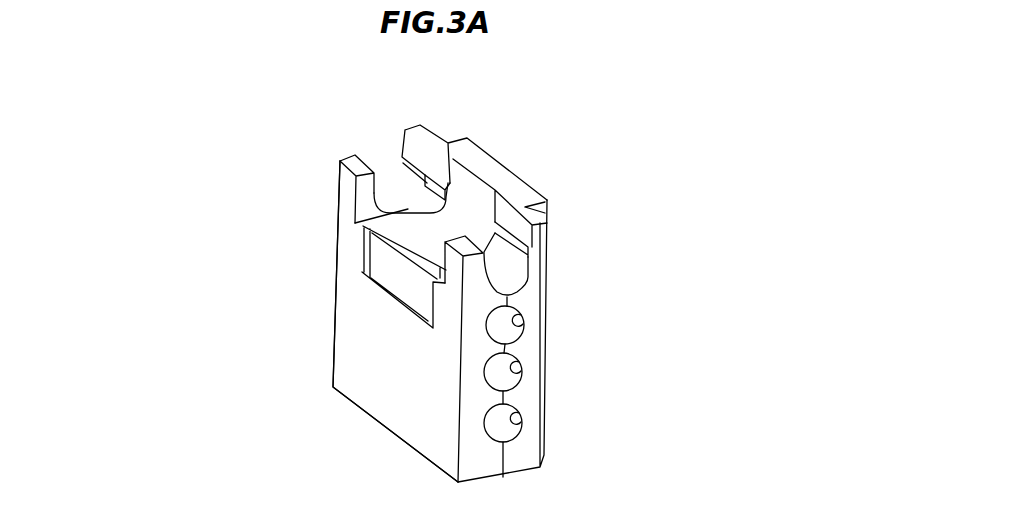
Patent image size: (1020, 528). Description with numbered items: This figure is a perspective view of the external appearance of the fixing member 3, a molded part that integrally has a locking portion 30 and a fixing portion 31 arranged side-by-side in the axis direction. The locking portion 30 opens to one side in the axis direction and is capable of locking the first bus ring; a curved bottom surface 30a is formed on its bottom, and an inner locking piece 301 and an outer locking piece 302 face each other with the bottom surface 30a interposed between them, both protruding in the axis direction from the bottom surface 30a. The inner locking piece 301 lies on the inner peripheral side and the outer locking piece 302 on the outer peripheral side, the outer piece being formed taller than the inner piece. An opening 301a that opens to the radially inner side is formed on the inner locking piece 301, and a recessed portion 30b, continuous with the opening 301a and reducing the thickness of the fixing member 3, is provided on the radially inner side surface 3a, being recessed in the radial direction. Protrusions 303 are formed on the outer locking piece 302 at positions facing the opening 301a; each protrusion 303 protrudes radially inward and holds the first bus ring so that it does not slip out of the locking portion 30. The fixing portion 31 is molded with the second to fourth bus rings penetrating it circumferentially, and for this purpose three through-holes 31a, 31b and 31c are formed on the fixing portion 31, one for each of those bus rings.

The fixing member 3 is at (567, 101).
The locking portion 30 is at (563, 249).
The bottom surface 30a is at (400, 186).
The recessed portion 30b is at (362, 273).
The inner locking piece 301 is at (362, 226).
The opening 301a is at (356, 180).
The outer locking piece 302 is at (480, 160).
The protrusion 303 is at (435, 183).
The fixing portion 31 is at (353, 357).
The through-hole 31a is at (522, 321).
The through-hole 31b is at (520, 371).
The through-hole 31c is at (522, 423).
The side surface 3a is at (358, 318).